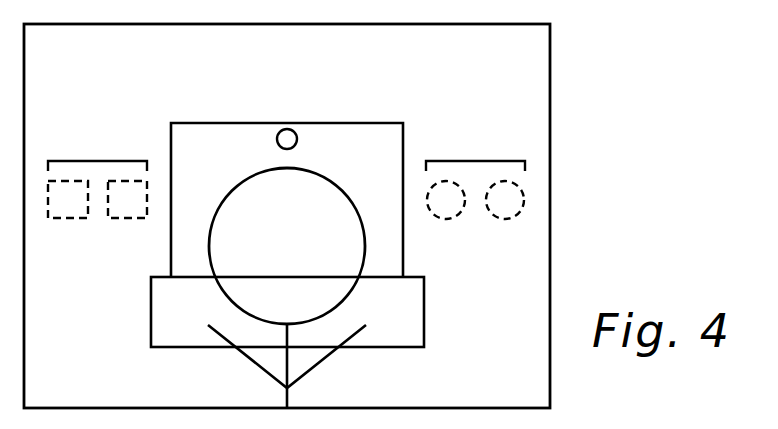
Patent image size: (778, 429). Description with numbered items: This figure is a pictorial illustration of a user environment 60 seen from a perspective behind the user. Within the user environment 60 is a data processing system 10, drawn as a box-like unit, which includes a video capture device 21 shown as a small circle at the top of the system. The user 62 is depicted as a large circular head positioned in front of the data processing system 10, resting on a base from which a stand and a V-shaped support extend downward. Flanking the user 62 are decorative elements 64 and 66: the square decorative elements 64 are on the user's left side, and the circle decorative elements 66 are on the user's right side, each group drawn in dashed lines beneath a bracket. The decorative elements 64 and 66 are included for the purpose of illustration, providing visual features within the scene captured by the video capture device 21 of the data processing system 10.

The user environment 60 is at (551, 57).
The data processing system 10 is at (375, 123).
The video capture device 21 is at (283, 129).
The user 62 is at (364, 257).
The decorative elements 64 is at (98, 161).
The decorative elements 66 is at (475, 161).